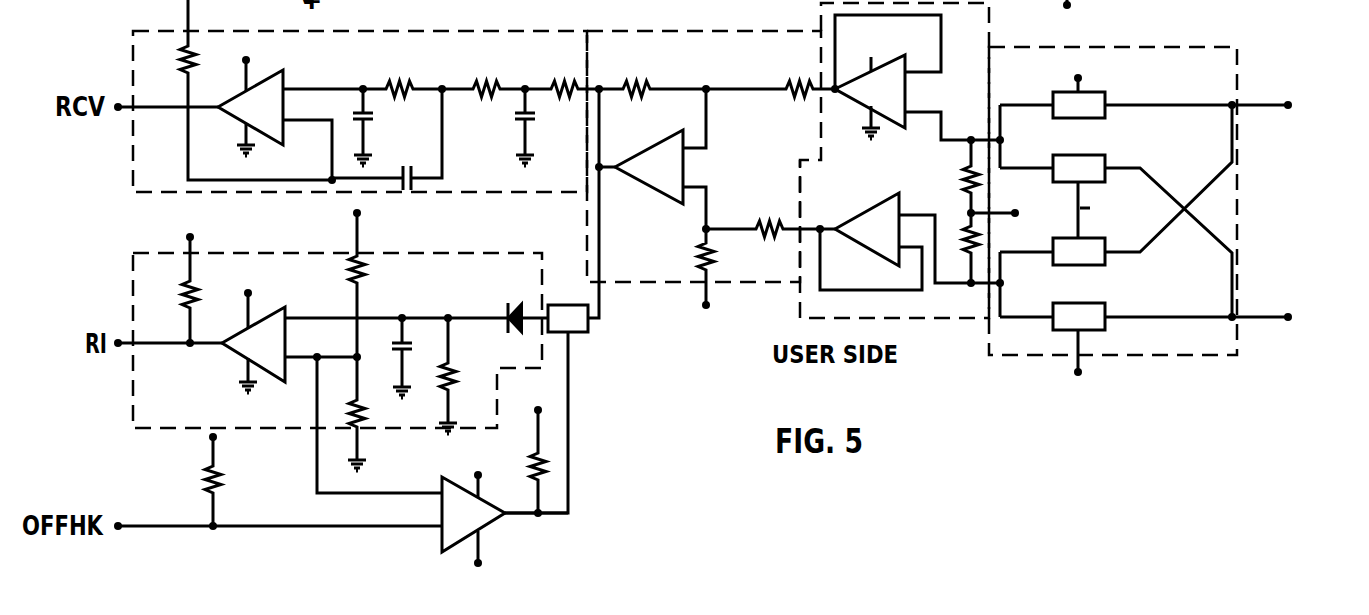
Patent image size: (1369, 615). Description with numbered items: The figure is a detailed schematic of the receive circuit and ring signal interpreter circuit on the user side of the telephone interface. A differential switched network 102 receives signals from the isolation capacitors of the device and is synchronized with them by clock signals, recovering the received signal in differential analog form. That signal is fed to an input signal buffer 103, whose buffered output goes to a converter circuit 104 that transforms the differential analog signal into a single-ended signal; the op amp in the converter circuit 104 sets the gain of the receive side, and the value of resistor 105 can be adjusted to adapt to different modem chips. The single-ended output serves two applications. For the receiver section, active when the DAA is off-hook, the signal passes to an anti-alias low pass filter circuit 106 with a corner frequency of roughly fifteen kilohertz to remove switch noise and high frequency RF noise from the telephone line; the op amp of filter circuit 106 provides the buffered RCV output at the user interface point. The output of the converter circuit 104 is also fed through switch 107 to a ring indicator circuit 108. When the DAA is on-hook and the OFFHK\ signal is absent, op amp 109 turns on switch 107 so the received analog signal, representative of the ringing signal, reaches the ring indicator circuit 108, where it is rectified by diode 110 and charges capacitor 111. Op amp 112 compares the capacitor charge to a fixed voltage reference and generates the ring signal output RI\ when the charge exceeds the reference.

The differential switched network 102 is at (1188, 147).
The input signal buffer 103 is at (895, 185).
The converter circuit 104 is at (770, 171).
The resistor 105 is at (648, 80).
The anti-alias low pass filter circuit 106 is at (406, 66).
The switch 107 is at (575, 320).
The ring indicator circuit 108 is at (215, 385).
The op amp 109 is at (470, 518).
The diode 110 is at (507, 310).
The capacitor 111 is at (408, 340).
The op amp 112 is at (275, 322).